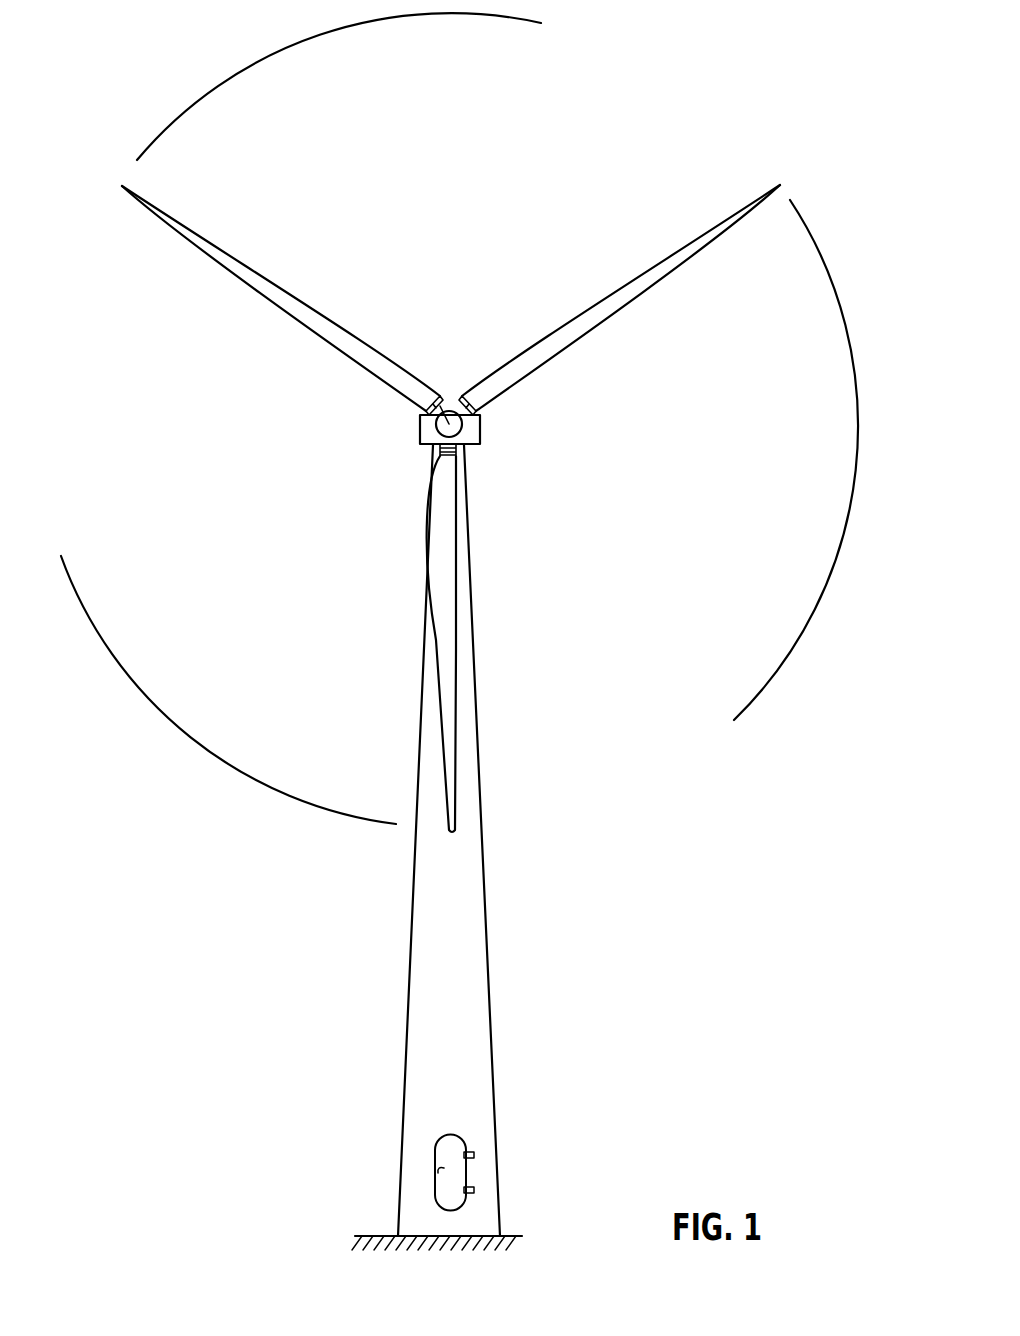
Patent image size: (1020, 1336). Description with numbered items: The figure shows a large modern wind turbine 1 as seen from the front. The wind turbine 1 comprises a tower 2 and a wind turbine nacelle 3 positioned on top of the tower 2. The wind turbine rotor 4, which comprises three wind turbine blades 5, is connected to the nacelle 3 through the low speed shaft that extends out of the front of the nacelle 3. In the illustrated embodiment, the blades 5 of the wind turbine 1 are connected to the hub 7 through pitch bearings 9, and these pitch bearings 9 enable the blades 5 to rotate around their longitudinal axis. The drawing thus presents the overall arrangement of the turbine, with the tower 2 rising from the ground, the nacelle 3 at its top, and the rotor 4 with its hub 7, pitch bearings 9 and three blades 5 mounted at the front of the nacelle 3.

The wind turbine 1 is at (459, 631).
The tower 2 is at (478, 925).
The wind turbine nacelle 3 is at (481, 445).
The wind turbine rotor 4 is at (438, 432).
The wind turbine blades 5 is at (451, 681).
The hub 7 is at (437, 398).
The pitch bearings 9 is at (462, 395).